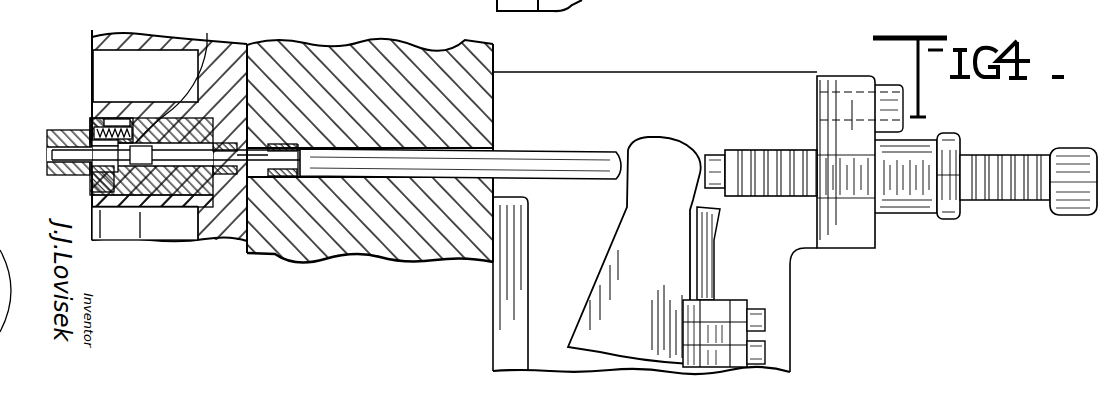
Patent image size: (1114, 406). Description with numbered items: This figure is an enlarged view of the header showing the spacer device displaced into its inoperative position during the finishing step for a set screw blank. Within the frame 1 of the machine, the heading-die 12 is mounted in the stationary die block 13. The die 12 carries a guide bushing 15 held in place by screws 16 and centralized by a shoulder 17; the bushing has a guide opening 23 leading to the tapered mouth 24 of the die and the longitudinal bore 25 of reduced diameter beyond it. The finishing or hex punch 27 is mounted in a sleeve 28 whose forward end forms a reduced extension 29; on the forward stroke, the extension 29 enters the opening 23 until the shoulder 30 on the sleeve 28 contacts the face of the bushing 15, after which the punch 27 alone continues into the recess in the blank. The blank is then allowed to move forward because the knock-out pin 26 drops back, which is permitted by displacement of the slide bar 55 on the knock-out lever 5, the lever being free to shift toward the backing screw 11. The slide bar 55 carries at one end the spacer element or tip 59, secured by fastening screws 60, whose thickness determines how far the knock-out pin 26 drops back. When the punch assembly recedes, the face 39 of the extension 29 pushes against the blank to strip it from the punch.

The frame 1 is at (376, 56).
The knock-out lever 5 is at (644, 148).
The backing screw 11 is at (788, 148).
The heading-die 12 is at (172, 212).
The die block 13 is at (183, 45).
The guide bushing 15 is at (88, 106).
The screws 16 is at (90, 122).
The shoulder 17 is at (98, 118).
The opening 23 is at (92, 190).
The tapered mouth 24 is at (120, 212).
The longitudinal bore 25 is at (140, 213).
The knock-out pin 26 is at (204, 215).
The finishing punch 27 is at (64, 172).
The sleeve 28 is at (50, 150).
The reduced extension 29 is at (84, 211).
The shoulder 30 is at (82, 140).
The face 39 is at (178, 80).
The slide bar 55 is at (728, 304).
The spacer element 59 is at (720, 236).
The fastening screws 60 is at (764, 345).